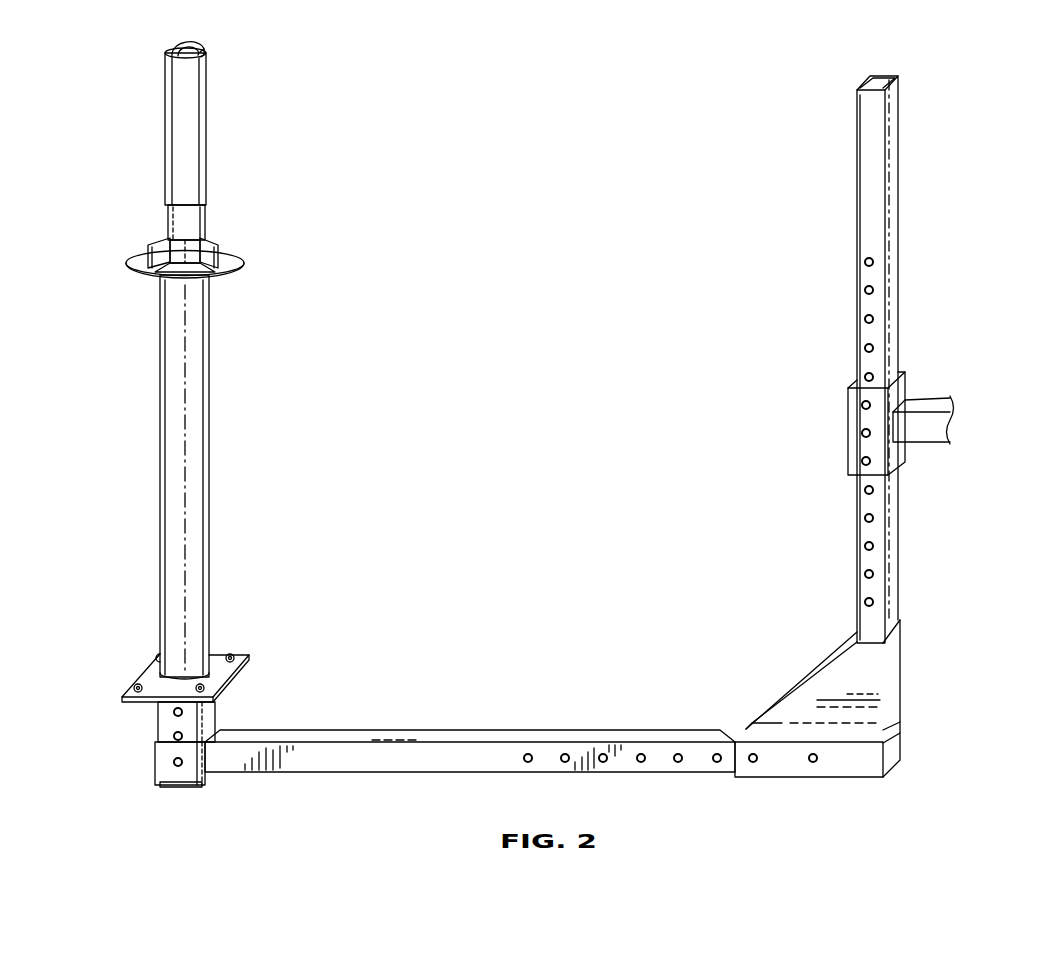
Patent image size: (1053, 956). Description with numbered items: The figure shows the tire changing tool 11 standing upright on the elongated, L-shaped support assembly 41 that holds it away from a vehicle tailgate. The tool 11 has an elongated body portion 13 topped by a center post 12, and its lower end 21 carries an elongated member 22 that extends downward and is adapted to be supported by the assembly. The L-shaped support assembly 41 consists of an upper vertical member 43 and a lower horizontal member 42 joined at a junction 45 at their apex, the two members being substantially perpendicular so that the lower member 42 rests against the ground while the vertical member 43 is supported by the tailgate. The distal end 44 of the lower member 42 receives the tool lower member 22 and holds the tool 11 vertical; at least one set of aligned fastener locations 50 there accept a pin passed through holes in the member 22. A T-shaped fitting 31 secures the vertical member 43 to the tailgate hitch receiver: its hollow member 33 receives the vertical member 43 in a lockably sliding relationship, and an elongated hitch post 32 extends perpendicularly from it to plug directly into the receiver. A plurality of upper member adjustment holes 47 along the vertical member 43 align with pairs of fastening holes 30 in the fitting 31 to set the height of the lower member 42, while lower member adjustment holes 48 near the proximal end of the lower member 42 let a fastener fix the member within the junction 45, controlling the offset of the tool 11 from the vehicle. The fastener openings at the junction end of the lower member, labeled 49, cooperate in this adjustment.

The tire changing tool 11 is at (256, 360).
The center post 12 is at (207, 114).
The elongated body portion 13 is at (210, 424).
The lower end 21 is at (230, 698).
The elongated member 22 is at (157, 718).
The fastening holes 30 is at (862, 461).
The T-shaped fitting 31 is at (860, 389).
The hitch post 32 is at (921, 425).
The hollow member 33 is at (852, 400).
The L-shaped support assembly 41 is at (624, 455).
The lower horizontal member 42 is at (470, 716).
The upper vertical member 43 is at (897, 359).
The distal end 44 is at (131, 797).
The junction 45 is at (804, 692).
The upper member adjustment holes 47 is at (866, 290).
The lower member adjustment holes 48 is at (603, 753).
The bracket holes 49 is at (758, 760).
The aligned fastener locations 50 is at (173, 770).